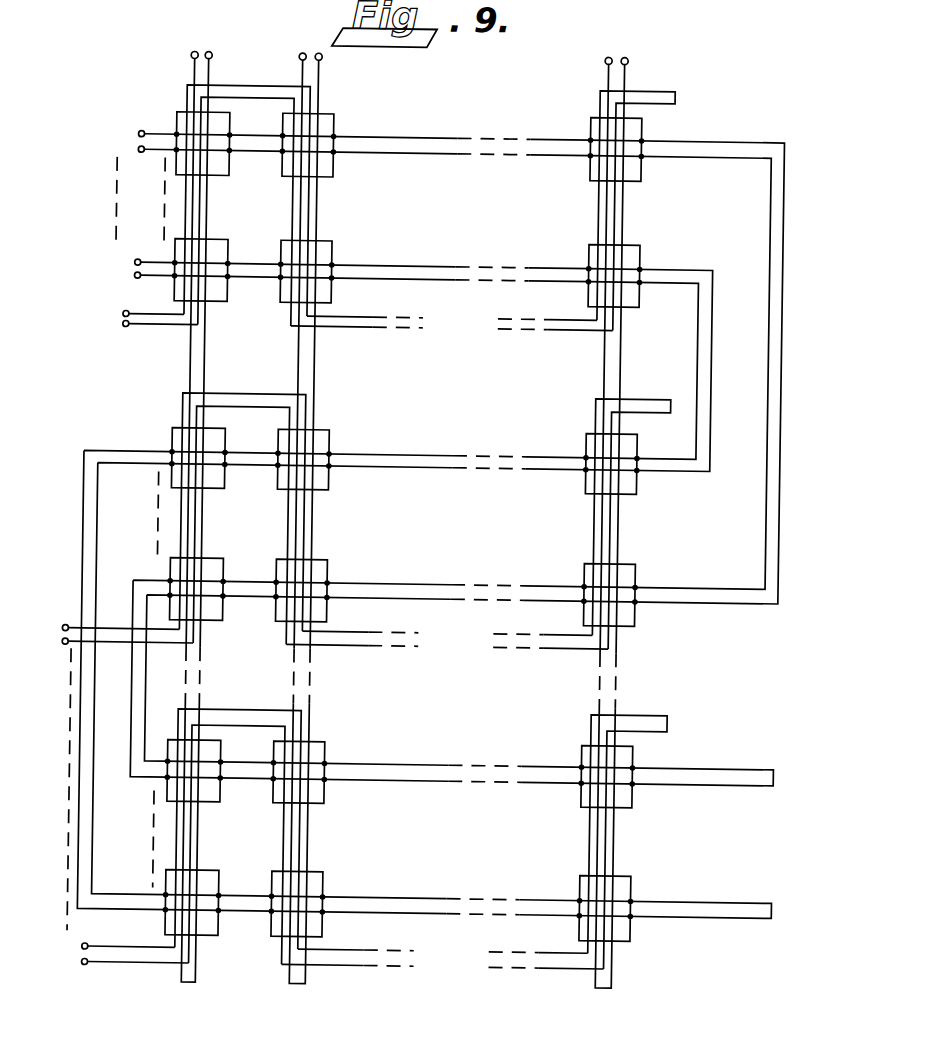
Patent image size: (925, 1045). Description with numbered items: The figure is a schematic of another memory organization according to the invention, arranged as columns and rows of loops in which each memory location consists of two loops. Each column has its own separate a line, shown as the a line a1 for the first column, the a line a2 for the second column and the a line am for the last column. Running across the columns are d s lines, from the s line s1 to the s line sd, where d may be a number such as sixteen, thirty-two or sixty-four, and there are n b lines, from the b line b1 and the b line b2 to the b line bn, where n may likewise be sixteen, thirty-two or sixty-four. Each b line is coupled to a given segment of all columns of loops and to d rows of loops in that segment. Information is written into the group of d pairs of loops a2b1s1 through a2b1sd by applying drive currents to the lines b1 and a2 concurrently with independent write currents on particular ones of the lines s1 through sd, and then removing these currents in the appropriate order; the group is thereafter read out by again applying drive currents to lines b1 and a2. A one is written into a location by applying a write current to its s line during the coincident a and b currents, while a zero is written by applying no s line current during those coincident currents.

The a line a1 is at (193, 501).
The a line a2 is at (303, 501).
The a line am is at (617, 508).
The s line s1 is at (349, 141).
The s line sd is at (347, 271).
The b line b1 is at (354, 322).
The b line b2 is at (321, 642).
The b line bn is at (326, 965).
The pair of loops a2b1s1 is at (330, 154).
The pair of loops a2b1sd is at (330, 281).